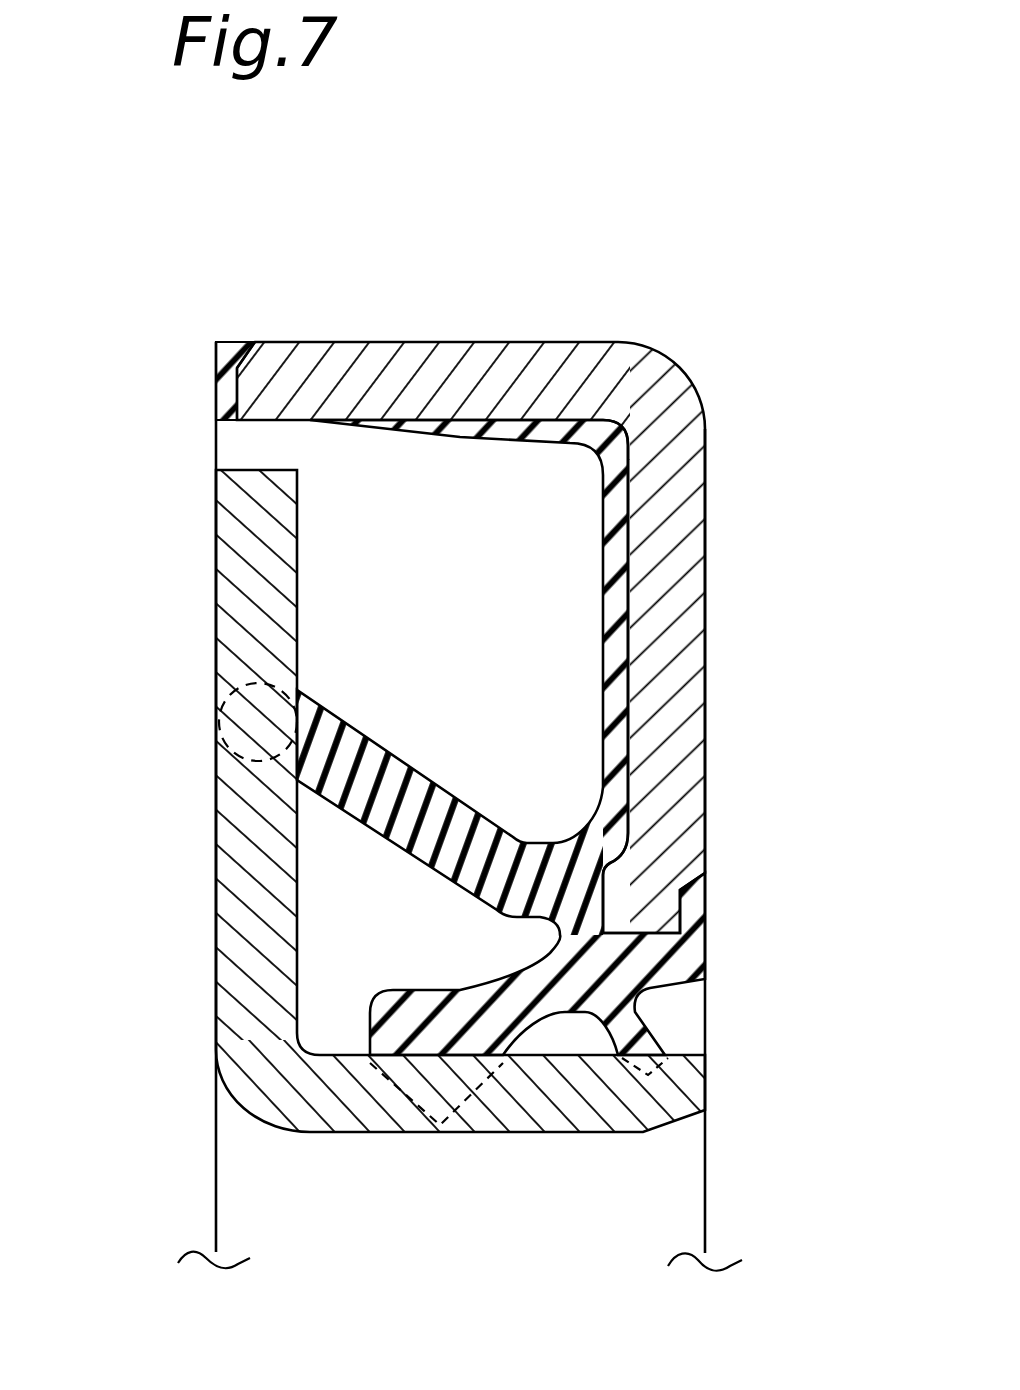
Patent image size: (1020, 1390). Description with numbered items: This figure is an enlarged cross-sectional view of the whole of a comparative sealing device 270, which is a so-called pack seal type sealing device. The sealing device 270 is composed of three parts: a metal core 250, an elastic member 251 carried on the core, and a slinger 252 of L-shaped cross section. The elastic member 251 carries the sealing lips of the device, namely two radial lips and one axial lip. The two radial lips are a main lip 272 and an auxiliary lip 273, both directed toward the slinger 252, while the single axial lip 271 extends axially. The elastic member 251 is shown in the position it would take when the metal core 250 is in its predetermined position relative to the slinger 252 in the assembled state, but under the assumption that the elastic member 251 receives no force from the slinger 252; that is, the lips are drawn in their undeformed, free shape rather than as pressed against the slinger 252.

The sealing device 270 is at (461, 699).
The metal core 250 is at (645, 385).
The elastic member 251 is at (634, 960).
The slinger 252 is at (243, 958).
The axial lip 271 is at (330, 750).
The main lip 272 is at (428, 1095).
The auxiliary lip 273 is at (660, 1062).